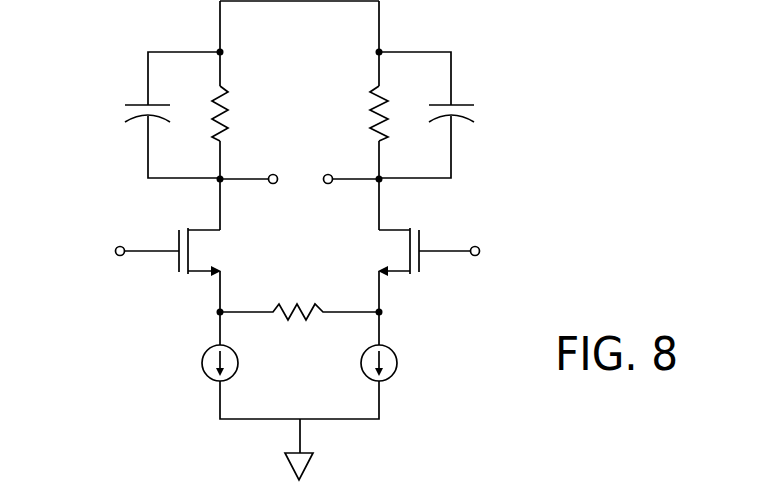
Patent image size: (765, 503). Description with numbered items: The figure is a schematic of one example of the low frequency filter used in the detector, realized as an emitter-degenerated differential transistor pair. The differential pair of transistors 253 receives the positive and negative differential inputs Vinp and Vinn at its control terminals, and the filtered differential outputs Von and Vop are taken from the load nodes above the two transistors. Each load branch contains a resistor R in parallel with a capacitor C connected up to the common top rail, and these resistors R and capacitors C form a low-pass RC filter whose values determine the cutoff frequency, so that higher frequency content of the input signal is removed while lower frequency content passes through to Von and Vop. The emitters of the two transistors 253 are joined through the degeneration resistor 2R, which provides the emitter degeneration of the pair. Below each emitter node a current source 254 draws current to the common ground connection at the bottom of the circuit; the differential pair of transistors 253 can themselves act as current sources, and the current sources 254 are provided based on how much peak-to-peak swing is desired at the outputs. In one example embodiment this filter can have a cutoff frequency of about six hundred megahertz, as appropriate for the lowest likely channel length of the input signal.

The differential pair of transistors 253 is at (191, 290).
The current sources 254 is at (202, 368).
The resistors R is at (300, 113).
The capacitors C is at (297, 116).
The degeneration resistor 2R is at (299, 298).
The positive differential input Vinp is at (122, 254).
The negative differential input Vinn is at (474, 254).
The differential output Von is at (251, 197).
The differential output Vop is at (350, 197).